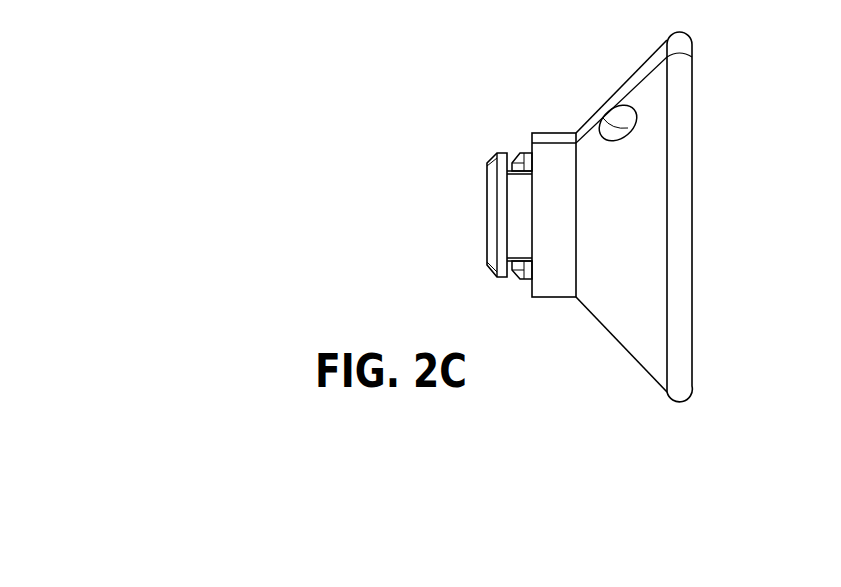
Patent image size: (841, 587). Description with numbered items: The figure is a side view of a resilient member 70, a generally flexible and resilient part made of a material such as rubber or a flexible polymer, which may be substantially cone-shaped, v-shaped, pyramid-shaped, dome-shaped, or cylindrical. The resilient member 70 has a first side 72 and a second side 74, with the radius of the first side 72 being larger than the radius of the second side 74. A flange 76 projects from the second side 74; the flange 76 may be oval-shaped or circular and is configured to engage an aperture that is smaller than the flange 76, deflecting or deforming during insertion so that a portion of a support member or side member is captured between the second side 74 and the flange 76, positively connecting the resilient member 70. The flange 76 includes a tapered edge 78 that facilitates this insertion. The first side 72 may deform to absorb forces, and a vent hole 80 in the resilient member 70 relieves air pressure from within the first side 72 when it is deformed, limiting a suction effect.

The resilient member 70 is at (728, 119).
The first side 72 is at (693, 205).
The second side 74 is at (551, 138).
The flange 76 is at (488, 210).
The tapered edge 78 is at (490, 268).
The vent hole 80 is at (622, 122).